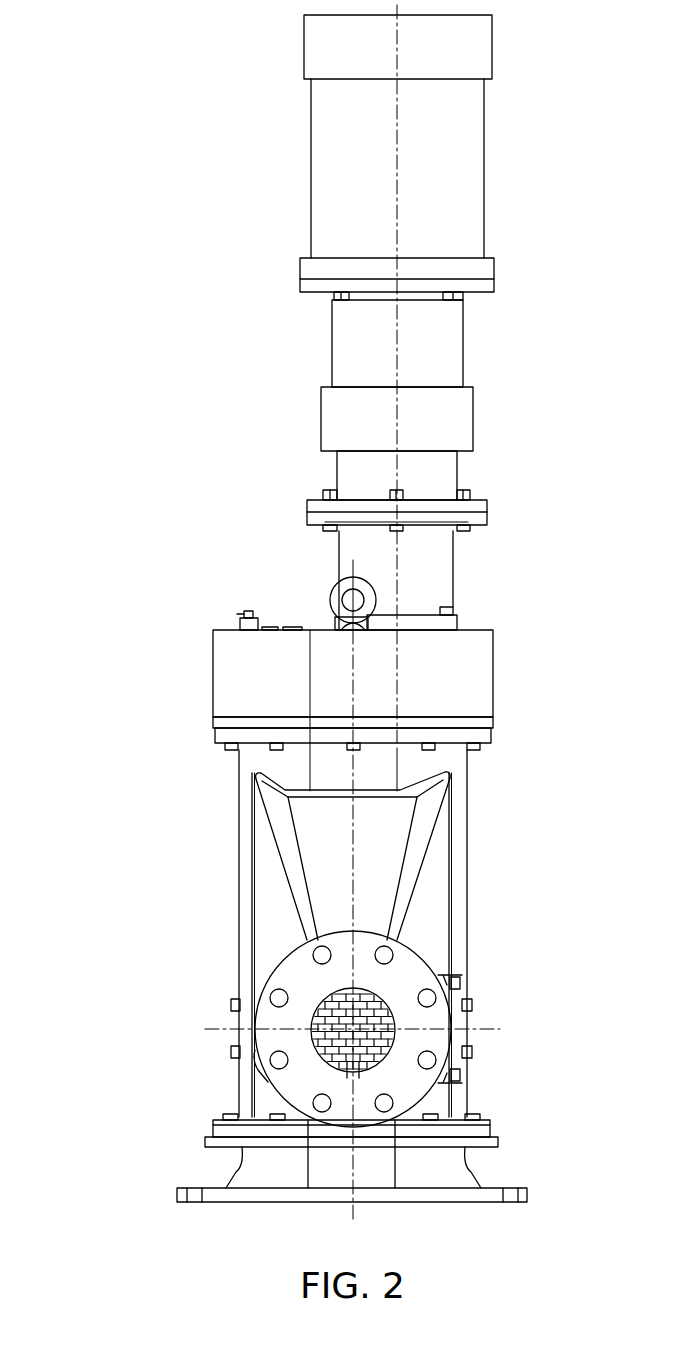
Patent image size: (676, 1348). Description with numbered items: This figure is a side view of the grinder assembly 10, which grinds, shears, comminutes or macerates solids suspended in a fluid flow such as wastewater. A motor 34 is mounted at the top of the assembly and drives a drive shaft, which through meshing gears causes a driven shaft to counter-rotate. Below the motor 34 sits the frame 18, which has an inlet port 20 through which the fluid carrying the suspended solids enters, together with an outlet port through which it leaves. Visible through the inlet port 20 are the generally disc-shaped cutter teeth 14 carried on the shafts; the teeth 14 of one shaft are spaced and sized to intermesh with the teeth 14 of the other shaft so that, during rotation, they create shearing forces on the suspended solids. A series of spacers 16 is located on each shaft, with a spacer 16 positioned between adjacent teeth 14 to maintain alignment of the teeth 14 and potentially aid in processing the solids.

The grinder assembly 10 is at (118, 140).
The motor 34 is at (484, 173).
The frame 18 is at (458, 766).
The inlet port 20 is at (285, 1078).
The spacer 16 is at (379, 1000).
The cutter teeth 14 is at (357, 1000).